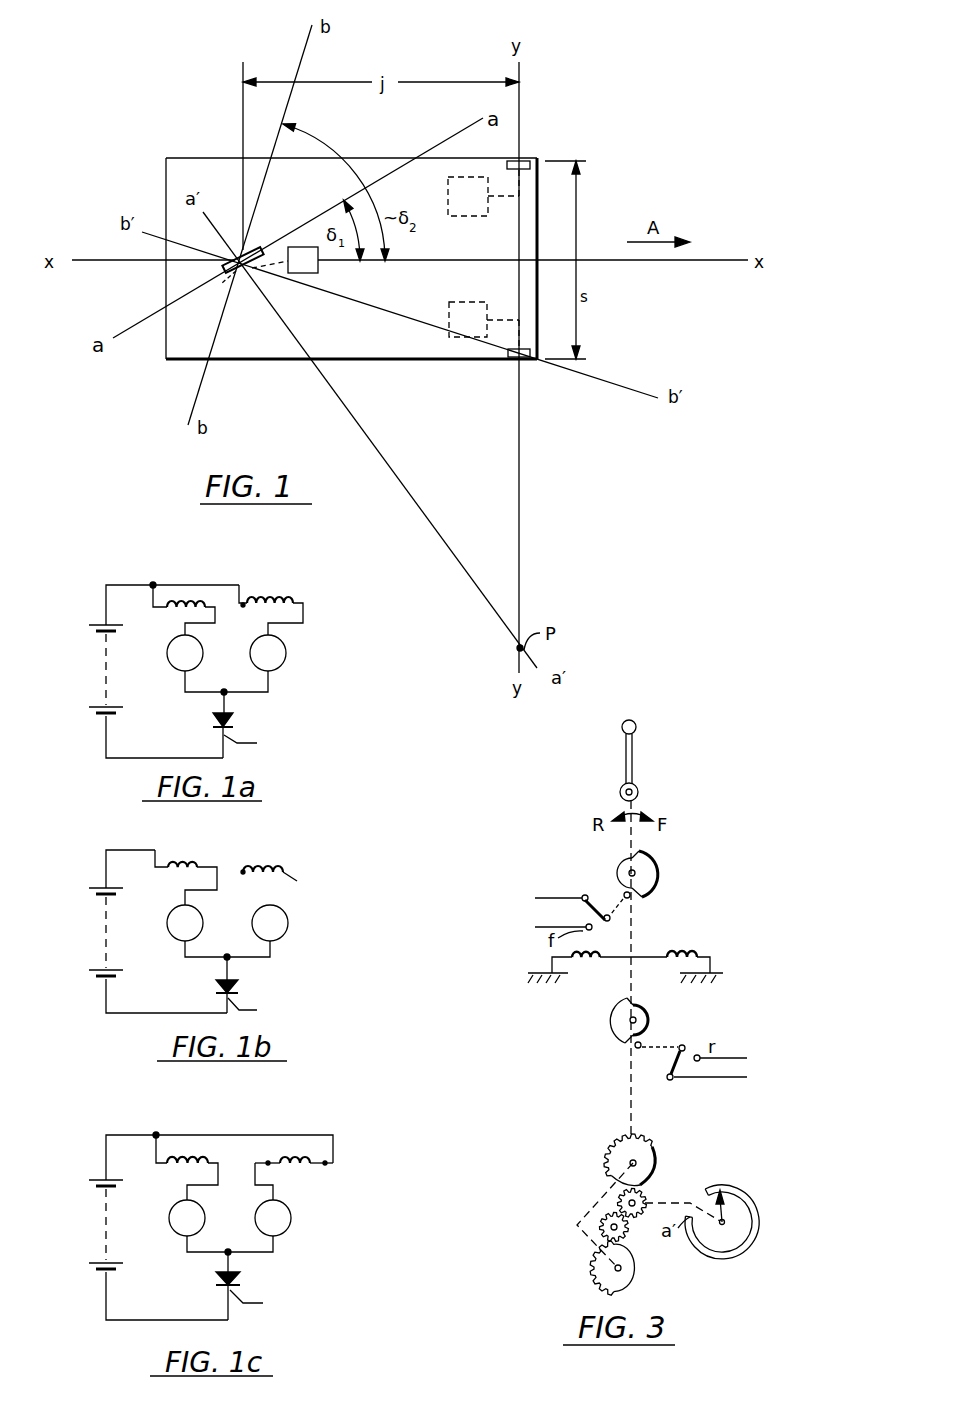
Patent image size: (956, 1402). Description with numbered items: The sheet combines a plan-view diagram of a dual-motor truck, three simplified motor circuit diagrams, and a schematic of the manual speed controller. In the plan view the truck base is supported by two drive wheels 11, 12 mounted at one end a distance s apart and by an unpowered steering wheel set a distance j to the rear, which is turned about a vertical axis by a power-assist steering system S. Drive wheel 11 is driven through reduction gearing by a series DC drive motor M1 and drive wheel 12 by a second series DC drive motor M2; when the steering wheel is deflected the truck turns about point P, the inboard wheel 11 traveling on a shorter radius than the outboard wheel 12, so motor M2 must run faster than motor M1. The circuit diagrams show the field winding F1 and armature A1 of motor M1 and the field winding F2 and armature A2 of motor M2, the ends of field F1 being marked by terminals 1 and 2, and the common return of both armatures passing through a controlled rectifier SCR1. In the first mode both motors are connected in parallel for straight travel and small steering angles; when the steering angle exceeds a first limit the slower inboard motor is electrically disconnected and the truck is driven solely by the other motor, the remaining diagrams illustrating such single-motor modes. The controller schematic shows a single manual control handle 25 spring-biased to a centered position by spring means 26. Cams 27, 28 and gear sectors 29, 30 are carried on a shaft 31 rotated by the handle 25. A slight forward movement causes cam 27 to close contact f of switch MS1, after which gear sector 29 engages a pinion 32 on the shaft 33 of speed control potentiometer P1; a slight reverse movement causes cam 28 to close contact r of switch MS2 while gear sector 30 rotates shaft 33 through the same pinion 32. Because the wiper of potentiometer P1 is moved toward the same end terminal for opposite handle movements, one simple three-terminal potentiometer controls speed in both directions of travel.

In FIG. 1, the drive wheel 11 is at (514, 358).
In FIG. 1, the drive wheel 12 is at (524, 160).
In FIG. 1, the power-assist steering system S is at (303, 260).
In FIG. 1, the series DC drive motor M1 is at (484, 325).
In FIG. 1a, the series DC drive motor M1 is at (325, 666).
In FIG. 1b, the series DC drive motor M1 is at (328, 936).
In FIG. 1, the series DC drive motor M2 is at (483, 192).
In FIG. 1a, the series DC drive motor M2 is at (160, 666).
In FIG. 1b, the series DC drive motor M2 is at (160, 936).
In FIG. 1a, the field winding F1 is at (271, 606).
In FIG. 1b, the field winding F1 is at (275, 866).
In FIG. 1c, the field winding F1 is at (294, 1178).
In FIG. 1a, the field winding F2 is at (181, 611).
In FIG. 1b, the field winding F2 is at (177, 877).
In FIG. 1c, the field winding F2 is at (181, 1167).
In FIG. 1a, the armature A1 is at (268, 653).
In FIG. 1b, the armature A1 is at (270, 923).
In FIG. 1c, the armature A1 is at (273, 1218).
In FIG. 1a, the armature 2 A2 is at (185, 653).
In FIG. 1b, the armature 2 A2 is at (185, 923).
In FIG. 1c, the armature 2 A2 is at (187, 1218).
In FIG. 1a, the silicon controlled rectifier SCR1 is at (252, 725).
In FIG. 1b, the silicon controlled rectifier SCR1 is at (254, 985).
In FIG. 1c, the silicon controlled rectifier SCR1 is at (259, 1286).
In FIG. 1a, the coil terminal 1 is at (240, 616).
In FIG. 1b, the coil terminal 1 is at (233, 884).
In FIG. 1c, the coil terminal 1 is at (263, 1151).
In FIG. 1a, the coil terminal 2 is at (302, 593).
In FIG. 1b, the coil terminal 2 is at (303, 887).
In FIG. 1c, the coil terminal 2 is at (322, 1148).
In FIG. 3, the manual control handle 25 is at (635, 752).
In FIG. 3, the spring means 26 is at (663, 928).
In FIG. 3, the cam 27 is at (657, 866).
In FIG. 3, the cam 28 is at (607, 1027).
In FIG. 3, the gear sector 29 is at (590, 1283).
In FIG. 3, the gear sector 30 is at (605, 1163).
In FIG. 3, the shaft 31 is at (630, 838).
In FIG. 3, the pinion 32 is at (643, 1192).
In FIG. 3, the potentiometer shaft 33 is at (692, 1208).
In FIG. 3, the microswitch 1 MS1 is at (576, 912).
In FIG. 3, the microswitch 2 MS2 is at (707, 1063).
In FIG. 3, the speed control potentiometer P1 is at (755, 1210).